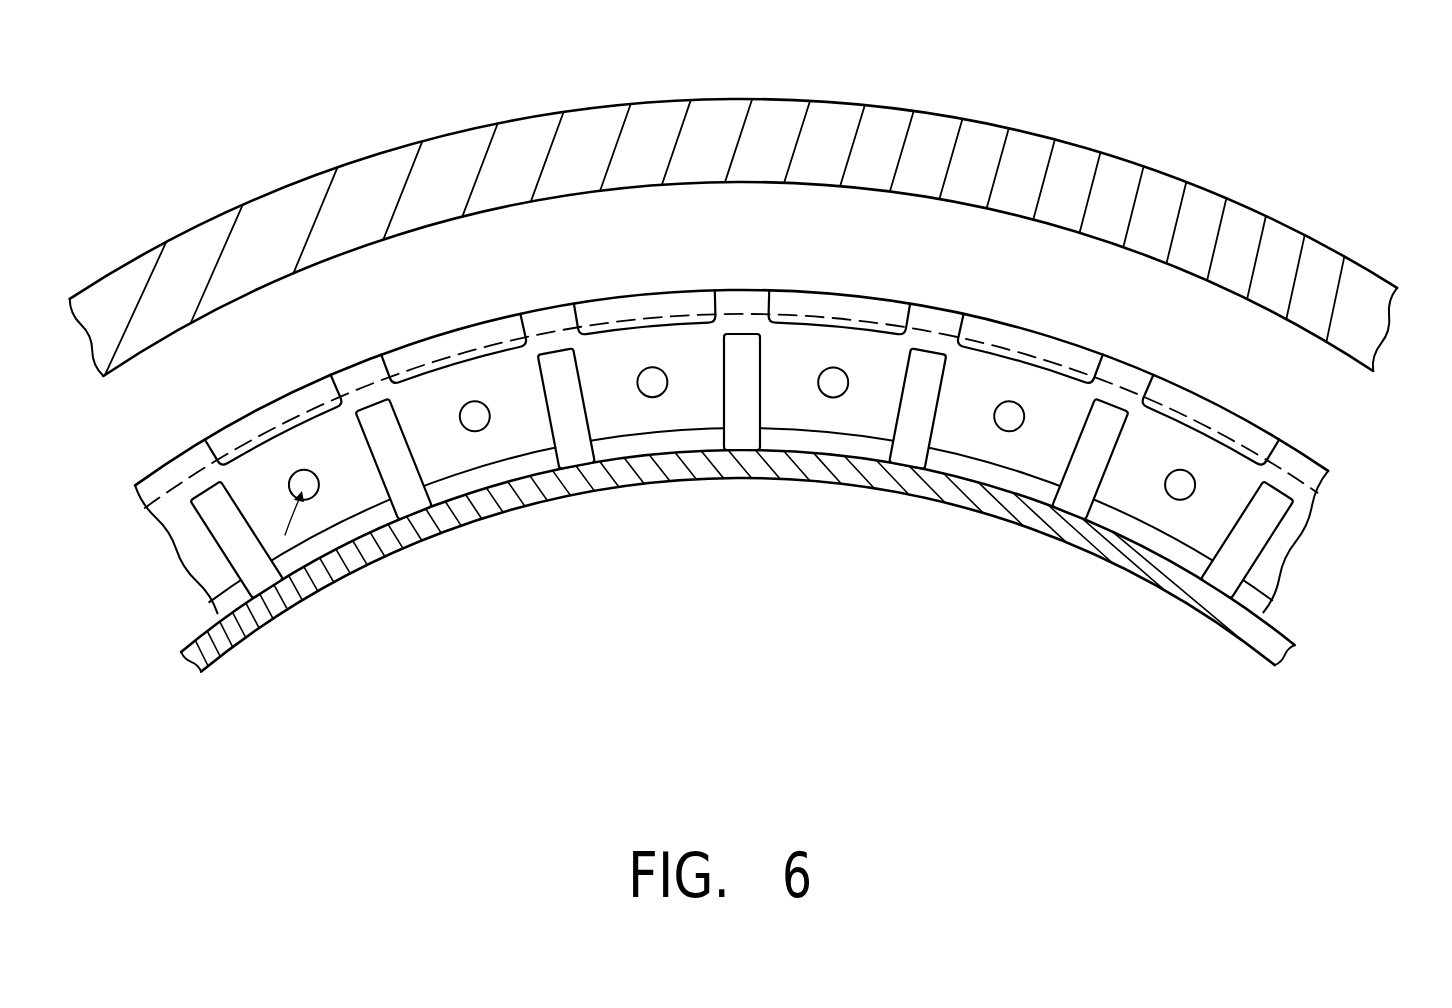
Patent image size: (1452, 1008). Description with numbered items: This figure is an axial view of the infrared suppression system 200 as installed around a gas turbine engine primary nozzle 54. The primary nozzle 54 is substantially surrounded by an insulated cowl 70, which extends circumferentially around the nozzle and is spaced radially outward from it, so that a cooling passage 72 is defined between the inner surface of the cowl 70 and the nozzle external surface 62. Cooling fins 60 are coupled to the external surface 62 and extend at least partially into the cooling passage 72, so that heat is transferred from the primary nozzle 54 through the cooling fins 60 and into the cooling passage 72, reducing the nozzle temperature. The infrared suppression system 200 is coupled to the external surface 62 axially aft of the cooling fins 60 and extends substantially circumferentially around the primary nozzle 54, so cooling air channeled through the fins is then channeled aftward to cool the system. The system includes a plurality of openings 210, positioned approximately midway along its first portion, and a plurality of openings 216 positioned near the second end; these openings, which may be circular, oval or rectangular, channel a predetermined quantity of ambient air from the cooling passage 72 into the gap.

The infrared suppression system 200 is at (749, 371).
The insulated cowl 70 is at (1075, 138).
The cooling passage 72 is at (727, 254).
The openings 216 is at (254, 420).
The cooling fins 60 is at (428, 458).
The openings 210 is at (652, 368).
The primary nozzle 54 is at (333, 583).
The external surface 62 is at (1157, 535).